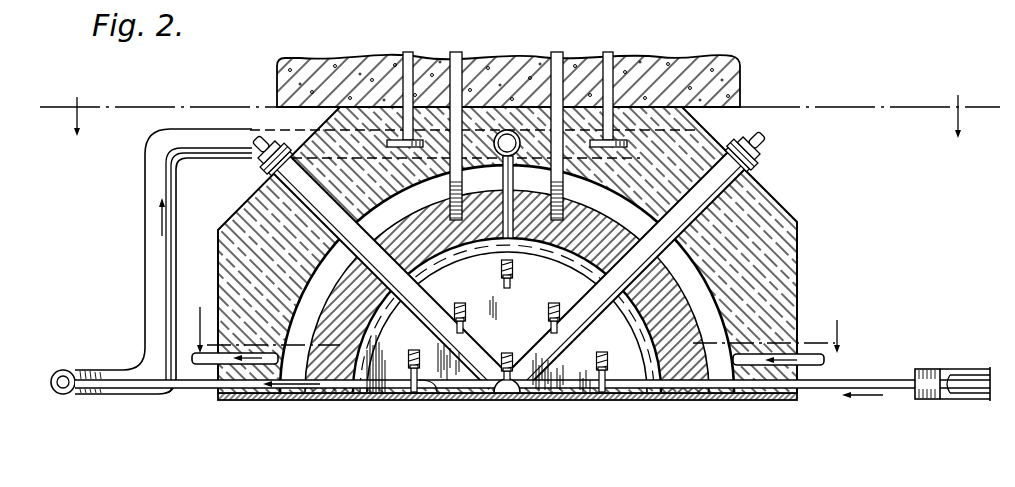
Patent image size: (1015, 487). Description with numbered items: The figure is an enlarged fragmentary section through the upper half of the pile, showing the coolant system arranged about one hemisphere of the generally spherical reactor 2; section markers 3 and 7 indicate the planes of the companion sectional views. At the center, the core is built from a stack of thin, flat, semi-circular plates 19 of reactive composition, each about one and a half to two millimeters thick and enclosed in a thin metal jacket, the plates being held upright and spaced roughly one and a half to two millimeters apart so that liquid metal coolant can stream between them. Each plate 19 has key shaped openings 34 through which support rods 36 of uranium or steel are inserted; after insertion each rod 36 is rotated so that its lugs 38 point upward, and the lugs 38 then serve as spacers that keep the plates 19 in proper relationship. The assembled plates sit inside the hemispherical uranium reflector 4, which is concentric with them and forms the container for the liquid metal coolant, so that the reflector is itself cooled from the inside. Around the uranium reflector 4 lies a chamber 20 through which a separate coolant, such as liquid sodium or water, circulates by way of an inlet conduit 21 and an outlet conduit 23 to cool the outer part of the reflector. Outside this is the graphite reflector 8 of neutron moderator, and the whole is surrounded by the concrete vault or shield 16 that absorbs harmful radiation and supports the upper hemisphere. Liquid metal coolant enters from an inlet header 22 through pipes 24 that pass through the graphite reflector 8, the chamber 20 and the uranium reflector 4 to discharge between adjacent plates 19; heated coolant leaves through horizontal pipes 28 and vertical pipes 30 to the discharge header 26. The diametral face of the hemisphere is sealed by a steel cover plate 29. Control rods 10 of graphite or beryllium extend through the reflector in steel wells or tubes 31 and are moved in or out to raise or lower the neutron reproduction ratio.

The reactive composition 2 is at (649, 347).
The section line 3- 3 is at (517, 116).
The uranium reflector 4 is at (333, 371).
The section line 7- 7 is at (522, 330).
The graphite reflector 8 is at (799, 237).
The control rods 10 is at (254, 137).
The concrete vault or shield 16 is at (670, 54).
The semi-circular plates 19 is at (621, 346).
The chamber 20 is at (693, 263).
The inlet conduit 21 is at (822, 366).
The inlet header 22 is at (957, 370).
The outlet conduit 23 is at (210, 364).
The pipes 24 is at (884, 376).
The discharge header 26 is at (513, 166).
The horizontal pipes 28 is at (175, 395).
The cover plate 29 is at (487, 400).
The vertical pipes 30 is at (463, 177).
The wells or tubes 31 is at (272, 172).
The key shaped openings 34 is at (501, 276).
The support rods 36 is at (513, 280).
The lugs 38 is at (514, 268).